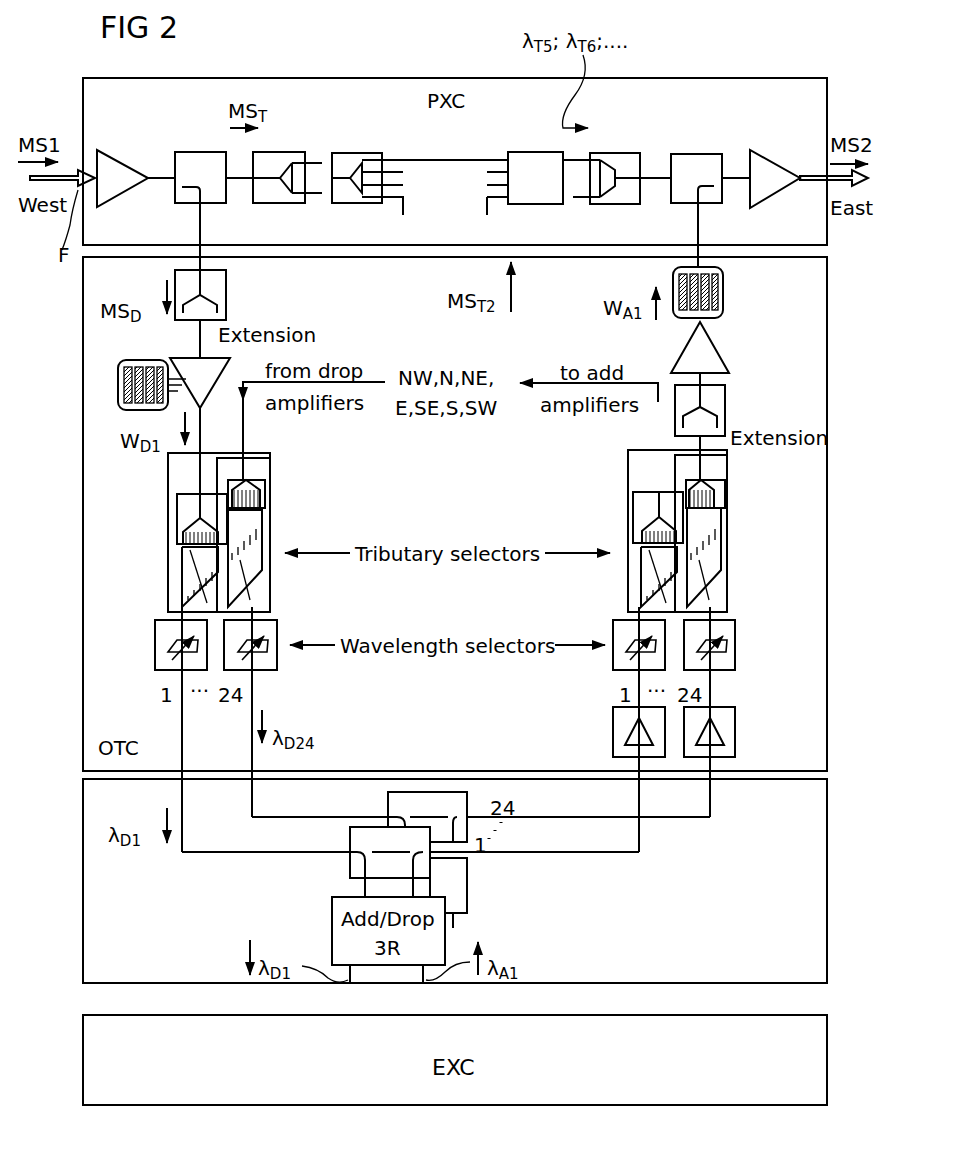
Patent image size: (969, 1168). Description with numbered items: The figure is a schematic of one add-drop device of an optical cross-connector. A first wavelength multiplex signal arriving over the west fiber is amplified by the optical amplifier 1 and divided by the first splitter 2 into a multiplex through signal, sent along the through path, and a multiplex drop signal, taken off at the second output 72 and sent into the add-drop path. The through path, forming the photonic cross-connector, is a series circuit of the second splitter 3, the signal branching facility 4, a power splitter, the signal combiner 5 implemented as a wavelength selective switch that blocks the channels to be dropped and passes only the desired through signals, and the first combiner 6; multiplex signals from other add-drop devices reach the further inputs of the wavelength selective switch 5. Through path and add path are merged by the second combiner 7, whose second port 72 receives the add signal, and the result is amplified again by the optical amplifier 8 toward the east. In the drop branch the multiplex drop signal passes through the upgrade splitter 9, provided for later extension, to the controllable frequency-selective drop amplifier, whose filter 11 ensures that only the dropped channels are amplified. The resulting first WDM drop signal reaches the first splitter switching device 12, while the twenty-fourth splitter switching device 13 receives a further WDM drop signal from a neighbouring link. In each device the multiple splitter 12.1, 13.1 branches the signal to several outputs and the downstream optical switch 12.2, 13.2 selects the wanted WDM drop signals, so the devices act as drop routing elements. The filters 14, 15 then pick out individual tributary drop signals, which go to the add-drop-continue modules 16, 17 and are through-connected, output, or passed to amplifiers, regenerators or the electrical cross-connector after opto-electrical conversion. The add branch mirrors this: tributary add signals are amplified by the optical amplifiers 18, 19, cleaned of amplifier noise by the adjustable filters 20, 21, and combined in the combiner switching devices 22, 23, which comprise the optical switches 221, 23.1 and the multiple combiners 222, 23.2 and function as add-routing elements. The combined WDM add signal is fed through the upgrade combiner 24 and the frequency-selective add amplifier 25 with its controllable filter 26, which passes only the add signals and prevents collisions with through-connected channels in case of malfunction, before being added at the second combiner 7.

The optical amplifier 1 is at (135, 150).
The first splitter 2 is at (190, 152).
The second splitter 3 is at (283, 152).
The signal branching facility 4 is at (362, 153).
The signal combiner 5 is at (527, 152).
The first combiner 6 is at (612, 153).
The second combiner 7 is at (700, 154).
The optical amplifier 8 is at (775, 150).
The upgrade splitter 9 is at (226, 293).
The controllable frequency-selective drop amplifier 11 is at (150, 360).
The first splitter switching device 12 is at (158, 478).
The multiple splitter 12.1 is at (182, 544).
The optical switch 12.2 is at (192, 577).
The twenty-fourth splitter switching device 13 is at (277, 470).
The multiple splitter 13.1 is at (268, 497).
The optical switch 13.2 is at (255, 540).
The filter 14 is at (156, 647).
The filter 15 is at (277, 633).
The add-drop-continue module 16 is at (350, 858).
The add-drop-continue module 17 is at (423, 792).
The optical amplifier 18 is at (614, 738).
The optical amplifier 19 is at (735, 732).
The adjustable filter 20 is at (613, 652).
The adjustable filter 21 is at (735, 645).
The combiner switching device 22 is at (622, 478).
The optical switch 221 is at (650, 538).
The multiple combiner 222 is at (650, 572).
The combiner switching device 23 is at (735, 492).
The optical switch 23.1 is at (722, 492).
The multiple combiner 23.2 is at (712, 555).
The upgrade combiner 24 is at (726, 408).
The frequency-selective add amplifier 25 is at (728, 352).
The controllable filter 26 is at (723, 305).
The second output 72 is at (200, 205).